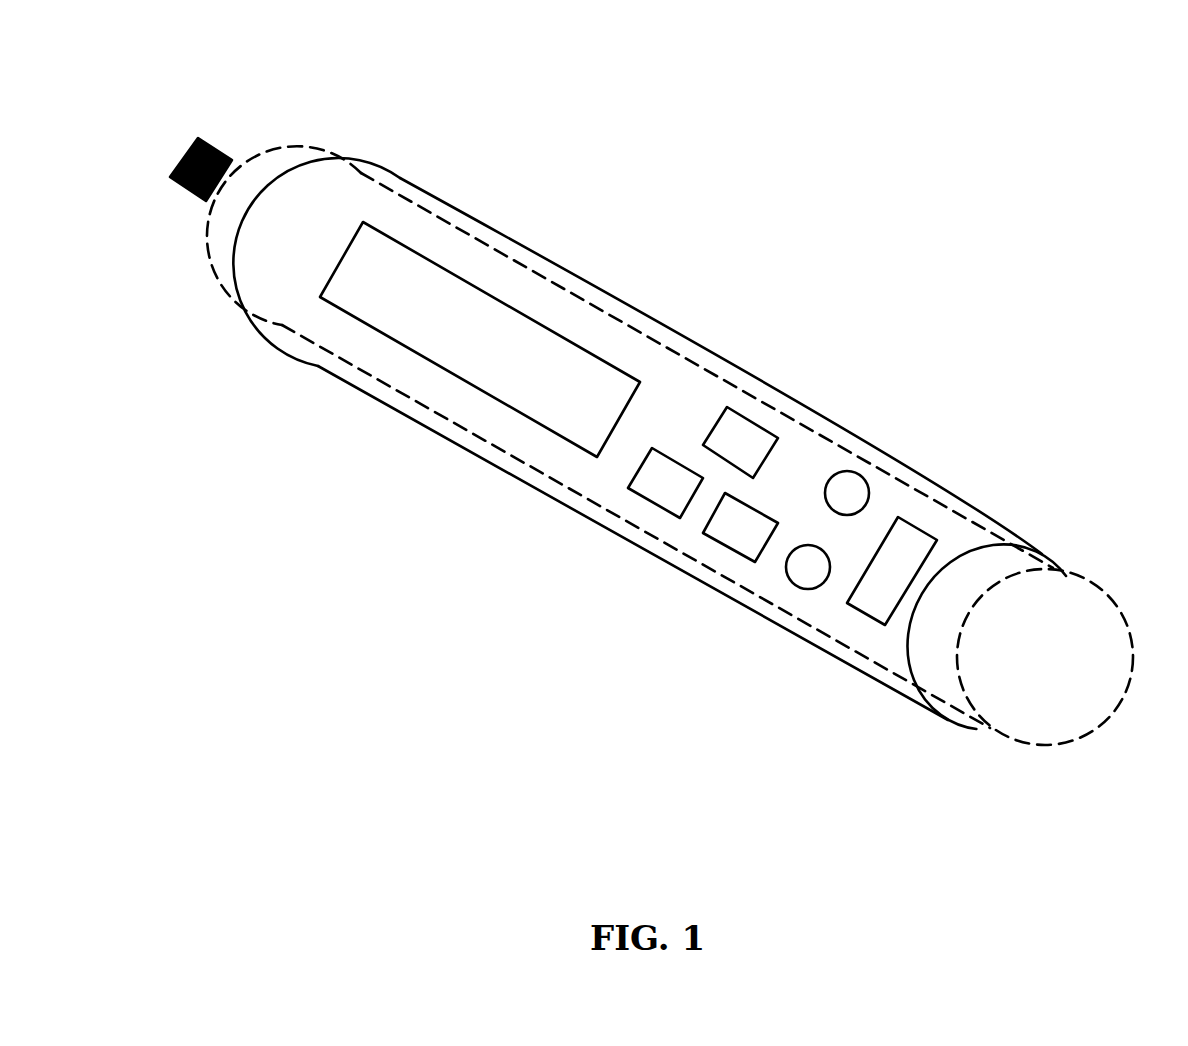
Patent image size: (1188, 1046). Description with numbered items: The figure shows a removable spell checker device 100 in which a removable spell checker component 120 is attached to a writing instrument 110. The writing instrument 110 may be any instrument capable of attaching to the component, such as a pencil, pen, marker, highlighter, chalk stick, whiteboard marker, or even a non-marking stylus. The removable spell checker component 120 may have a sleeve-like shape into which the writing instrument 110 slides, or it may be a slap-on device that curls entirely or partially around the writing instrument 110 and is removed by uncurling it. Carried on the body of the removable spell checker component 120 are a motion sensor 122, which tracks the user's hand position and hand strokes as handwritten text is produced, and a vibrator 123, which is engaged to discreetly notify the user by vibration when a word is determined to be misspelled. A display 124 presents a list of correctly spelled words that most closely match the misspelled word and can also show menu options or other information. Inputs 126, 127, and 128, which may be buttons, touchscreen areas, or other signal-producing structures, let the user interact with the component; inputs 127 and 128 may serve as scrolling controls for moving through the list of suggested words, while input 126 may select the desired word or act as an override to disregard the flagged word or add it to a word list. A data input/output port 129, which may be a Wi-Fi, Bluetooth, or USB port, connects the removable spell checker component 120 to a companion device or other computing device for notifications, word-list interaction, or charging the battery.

The electronic device 100 is at (1059, 128).
The writing instrument 110 is at (258, 155).
The removable spell checker component 120 is at (557, 265).
The motion sensor 122 is at (848, 471).
The vibrator 123 is at (808, 589).
The display 124 is at (460, 378).
The input 126 is at (753, 421).
The input 127 is at (655, 504).
The input 128 is at (727, 547).
The data input/output port 129 is at (867, 615).